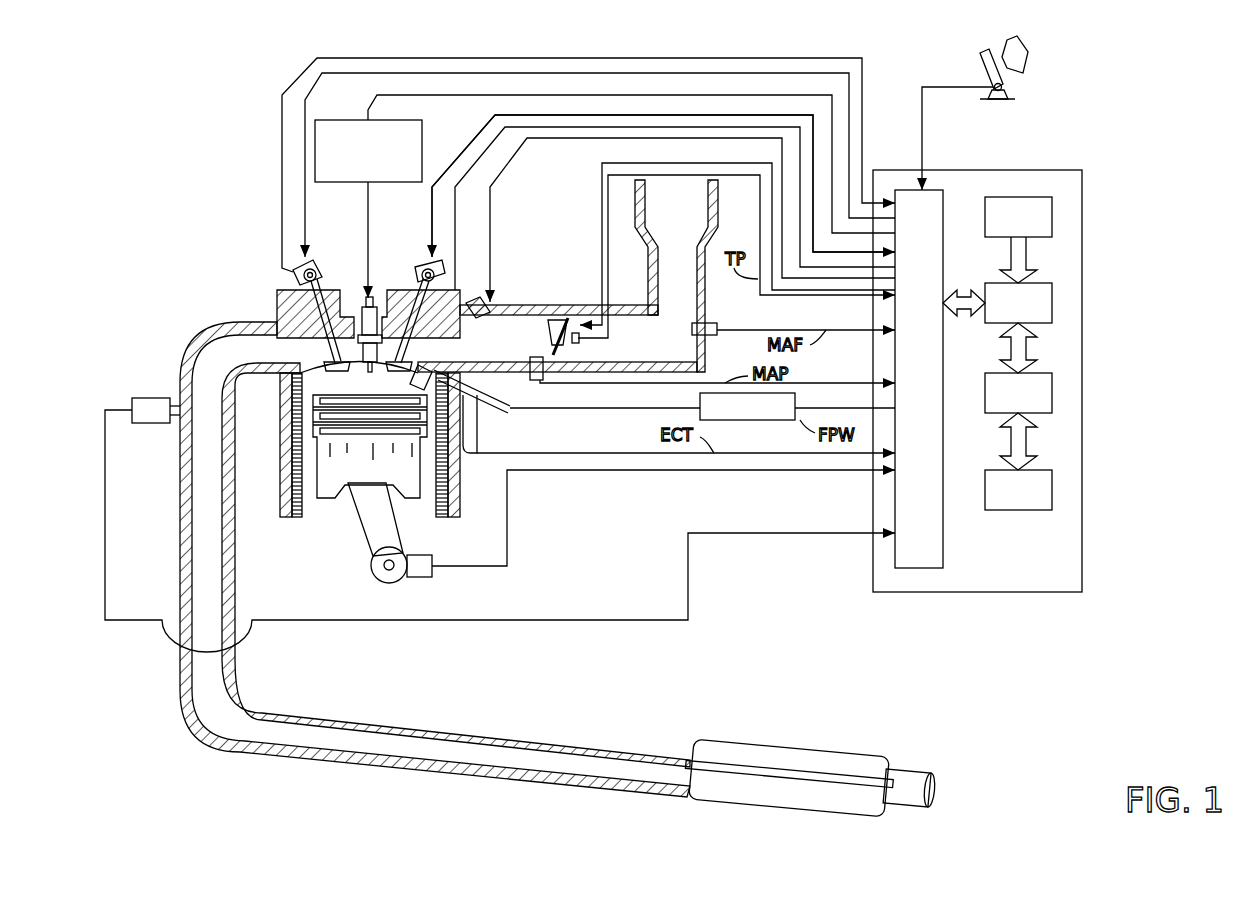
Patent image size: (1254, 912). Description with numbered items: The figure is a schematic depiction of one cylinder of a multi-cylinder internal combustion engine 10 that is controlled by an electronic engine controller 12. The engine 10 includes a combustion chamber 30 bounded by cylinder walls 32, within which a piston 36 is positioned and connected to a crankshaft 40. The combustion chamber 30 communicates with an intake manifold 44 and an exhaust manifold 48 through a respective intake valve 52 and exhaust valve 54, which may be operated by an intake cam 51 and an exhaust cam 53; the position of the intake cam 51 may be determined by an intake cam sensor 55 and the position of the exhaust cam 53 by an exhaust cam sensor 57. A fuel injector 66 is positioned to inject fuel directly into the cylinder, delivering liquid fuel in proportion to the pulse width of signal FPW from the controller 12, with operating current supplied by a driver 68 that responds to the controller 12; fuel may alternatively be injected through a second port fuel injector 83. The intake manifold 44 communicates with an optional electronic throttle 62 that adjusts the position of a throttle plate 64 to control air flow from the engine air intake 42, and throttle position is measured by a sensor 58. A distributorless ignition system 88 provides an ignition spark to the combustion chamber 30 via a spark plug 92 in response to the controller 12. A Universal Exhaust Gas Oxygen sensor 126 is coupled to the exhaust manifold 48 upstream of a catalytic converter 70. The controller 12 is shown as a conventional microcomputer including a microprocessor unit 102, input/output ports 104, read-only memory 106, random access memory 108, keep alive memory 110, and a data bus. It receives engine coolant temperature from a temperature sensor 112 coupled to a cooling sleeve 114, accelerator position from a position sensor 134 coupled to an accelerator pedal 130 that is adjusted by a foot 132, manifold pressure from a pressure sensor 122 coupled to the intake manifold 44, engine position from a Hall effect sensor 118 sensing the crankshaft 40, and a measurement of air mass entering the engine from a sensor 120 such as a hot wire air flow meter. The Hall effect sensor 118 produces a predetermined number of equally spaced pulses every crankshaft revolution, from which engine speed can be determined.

The internal combustion engine 10 is at (213, 246).
The electronic engine controller 12 is at (1020, 367).
The combustion chamber 30 is at (290, 480).
The cylinder walls 32 is at (318, 512).
The piston 36 is at (358, 475).
The crankshaft 40 is at (378, 580).
The engine air intake 42 is at (689, 226).
The intake manifold 44 is at (501, 351).
The exhaust manifold 48 is at (258, 358).
The intake cam 51 is at (428, 265).
The intake valve 52 is at (418, 352).
The exhaust cam 53 is at (318, 262).
The exhaust valve 54 is at (330, 362).
The intake cam sensor 55 is at (445, 274).
The exhaust cam sensor 57 is at (294, 282).
The throttle position sensor 58 is at (569, 315).
The electronic throttle 62 is at (552, 309).
The throttle plate 64 is at (560, 318).
The fuel injector 66 is at (471, 398).
The driver 68 is at (786, 422).
The catalytic converter 70 is at (700, 808).
The second port fuel injector 83 is at (486, 308).
The distributorless ignition system 88 is at (326, 120).
The spark plug 92 is at (376, 300).
The microprocessor unit 102 is at (1053, 302).
The input/output ports 104 is at (945, 192).
The read-only memory 106 is at (1053, 212).
The random access memory 108 is at (1053, 392).
The keep alive memory 110 is at (1053, 490).
The temperature sensor 112 is at (470, 455).
The cooling sleeve 114 is at (455, 500).
The Hall effect sensor 118 is at (415, 578).
The air mass sensor 120 is at (712, 323).
The pressure sensor 122 is at (537, 357).
The Universal Exhaust Gas Oxygen sensor 126 is at (131, 403).
The accelerator pedal 130 is at (982, 63).
The foot 132 is at (1030, 55).
The position sensor 134 is at (1008, 89).